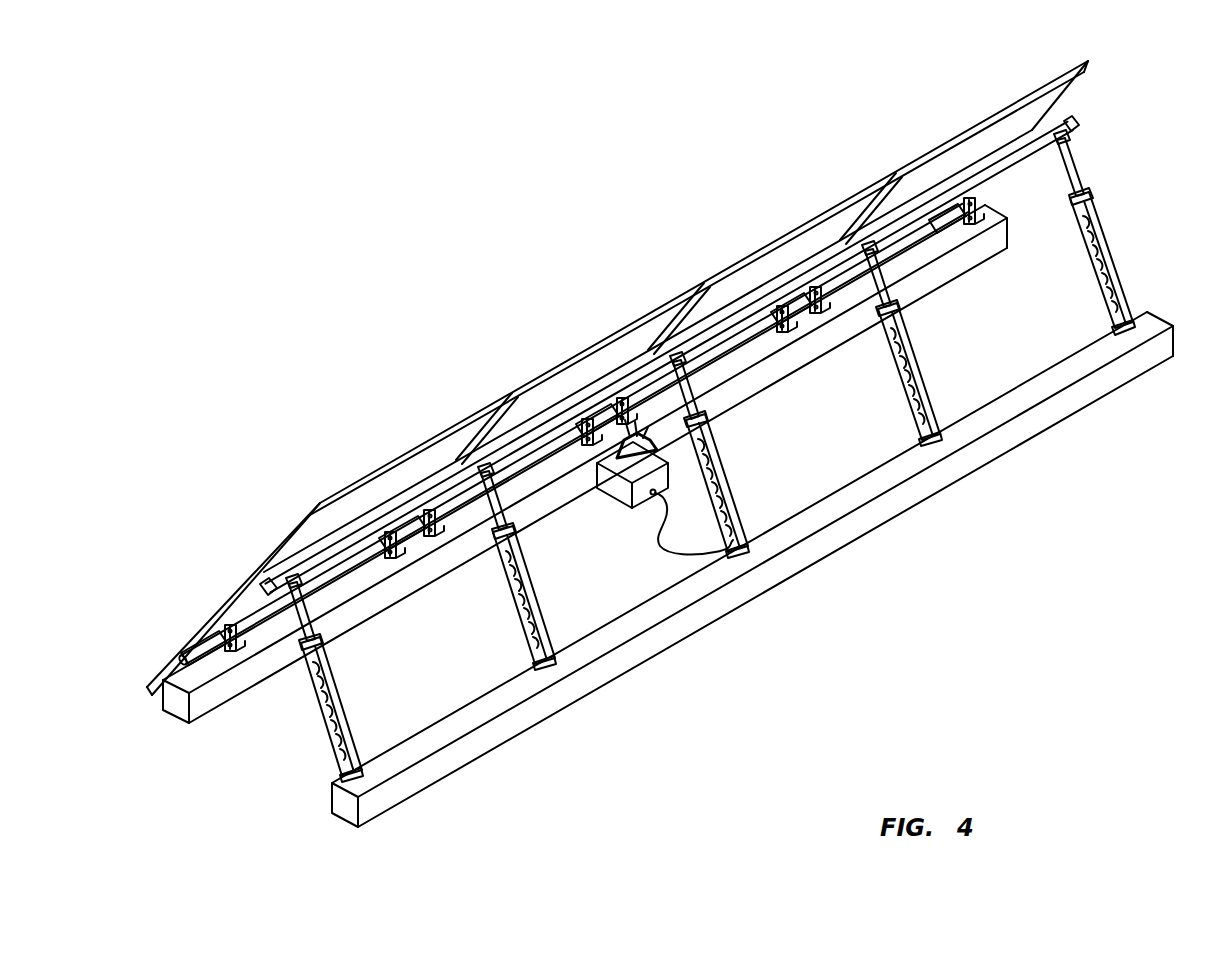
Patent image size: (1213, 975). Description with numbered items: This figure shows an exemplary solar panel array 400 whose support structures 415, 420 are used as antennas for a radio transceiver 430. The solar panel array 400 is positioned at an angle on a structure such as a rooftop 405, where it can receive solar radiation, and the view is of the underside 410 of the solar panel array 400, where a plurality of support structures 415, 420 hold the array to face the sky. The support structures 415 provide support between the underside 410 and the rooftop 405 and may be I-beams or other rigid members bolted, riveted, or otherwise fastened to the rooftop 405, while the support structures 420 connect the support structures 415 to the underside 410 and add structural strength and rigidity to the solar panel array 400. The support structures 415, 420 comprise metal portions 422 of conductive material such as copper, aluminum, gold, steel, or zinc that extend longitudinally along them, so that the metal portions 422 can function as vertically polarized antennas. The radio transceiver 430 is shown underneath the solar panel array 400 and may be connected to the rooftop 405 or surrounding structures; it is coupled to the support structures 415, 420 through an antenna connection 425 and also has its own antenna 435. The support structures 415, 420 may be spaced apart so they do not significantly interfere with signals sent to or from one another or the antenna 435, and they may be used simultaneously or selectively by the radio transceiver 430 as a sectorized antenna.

The solar panel array 400 is at (362, 472).
The rooftop 405 is at (932, 489).
The underside 410 is at (563, 385).
The support structures 415 is at (336, 731).
The support structures 420 is at (1066, 122).
The metal portions 422 is at (350, 708).
The antenna connection 425 is at (665, 548).
The radio transceiver 430 is at (611, 488).
The antenna 435 is at (661, 452).